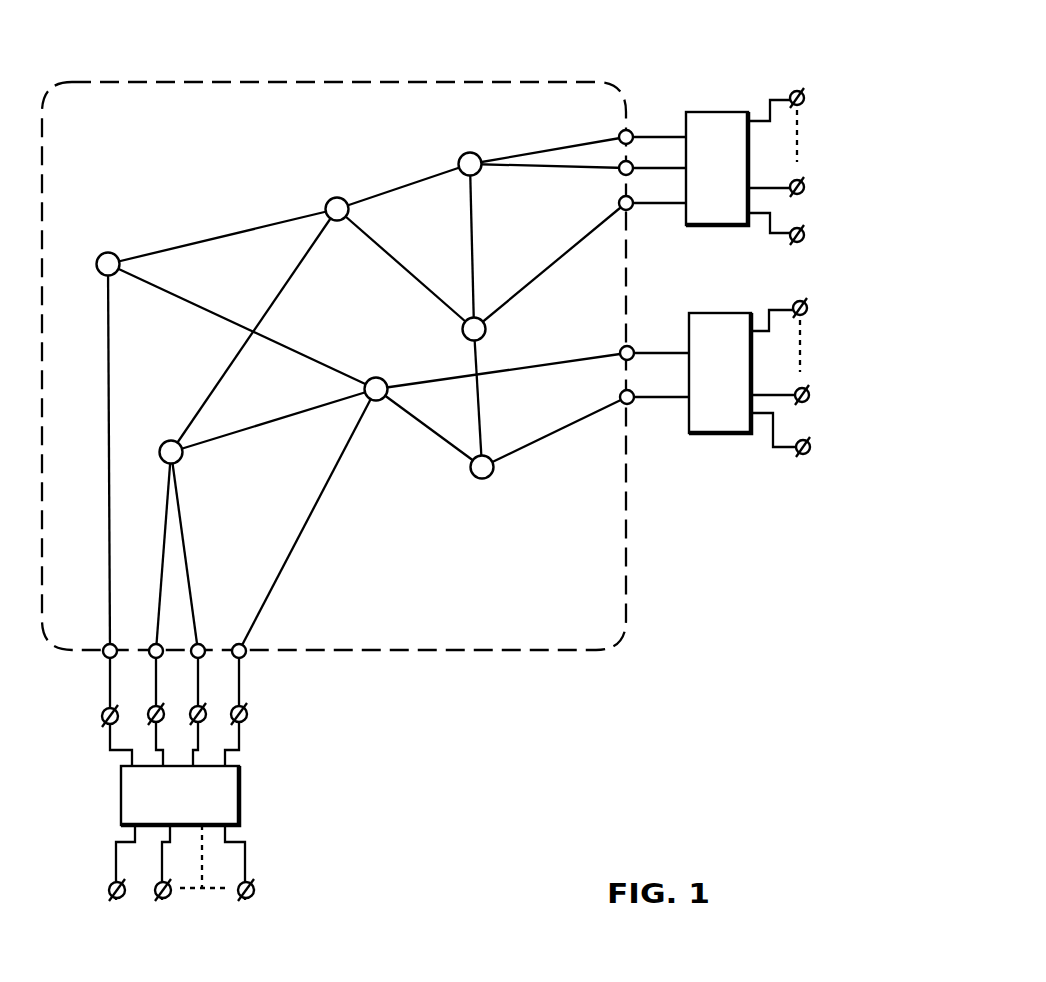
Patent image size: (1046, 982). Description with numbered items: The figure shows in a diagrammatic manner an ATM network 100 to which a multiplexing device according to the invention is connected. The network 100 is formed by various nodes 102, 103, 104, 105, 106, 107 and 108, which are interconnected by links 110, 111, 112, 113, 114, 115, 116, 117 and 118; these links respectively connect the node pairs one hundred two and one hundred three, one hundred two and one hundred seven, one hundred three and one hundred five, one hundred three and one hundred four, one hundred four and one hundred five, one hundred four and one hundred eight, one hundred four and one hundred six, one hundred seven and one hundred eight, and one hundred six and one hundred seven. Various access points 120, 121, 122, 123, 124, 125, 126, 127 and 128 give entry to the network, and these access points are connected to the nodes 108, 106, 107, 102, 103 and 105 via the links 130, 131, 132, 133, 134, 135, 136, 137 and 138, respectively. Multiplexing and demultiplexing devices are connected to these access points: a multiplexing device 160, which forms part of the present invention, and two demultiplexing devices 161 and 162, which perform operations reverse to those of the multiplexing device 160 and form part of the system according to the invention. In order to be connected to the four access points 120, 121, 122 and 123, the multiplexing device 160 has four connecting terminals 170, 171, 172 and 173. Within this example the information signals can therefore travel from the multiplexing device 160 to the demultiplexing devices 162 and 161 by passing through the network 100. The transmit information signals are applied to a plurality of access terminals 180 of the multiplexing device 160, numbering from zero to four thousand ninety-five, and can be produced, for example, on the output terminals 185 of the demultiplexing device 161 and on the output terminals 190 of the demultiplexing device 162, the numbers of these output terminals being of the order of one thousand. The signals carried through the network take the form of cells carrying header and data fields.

The ATM network 100 is at (525, 652).
The node 102 is at (480, 480).
The node 103 is at (462, 333).
The node 104 is at (332, 198).
The node 105 is at (465, 152).
The node 106 is at (171, 440).
The node 107 is at (374, 376).
The node 108 is at (108, 252).
The link 110 is at (478, 403).
The link 111 is at (428, 427).
The link 112 is at (471, 240).
The link 113 is at (392, 257).
The link 114 is at (402, 187).
The link 115 is at (222, 238).
The link 116 is at (280, 292).
The link 117 is at (187, 301).
The link 118 is at (262, 425).
The access point 120 is at (103, 646).
The access point 121 is at (151, 645).
The access point 122 is at (201, 644).
The access point 123 is at (246, 647).
The access point 124 is at (632, 404).
The access point 125 is at (622, 346).
The access point 126 is at (632, 209).
The access point 127 is at (618, 174).
The access point 128 is at (630, 130).
The link 130 is at (108, 428).
The link 131 is at (163, 560).
The link 132 is at (184, 548).
The link 133 is at (334, 470).
The link 134 is at (545, 437).
The link 135 is at (568, 362).
The link 136 is at (555, 262).
The link 137 is at (537, 170).
The link 138 is at (556, 150).
The multiplexing device 160 is at (240, 790).
The demultiplexing device 161 is at (712, 435).
The demultiplexing device 162 is at (710, 112).
The connecting terminal 170 is at (103, 720).
The connecting terminal 171 is at (148, 708).
The connecting terminal 172 is at (206, 708).
The connecting terminal 173 is at (248, 720).
The access terminals 180 is at (108, 886).
The output terminals 185 is at (807, 300).
The output terminals 190 is at (805, 90).